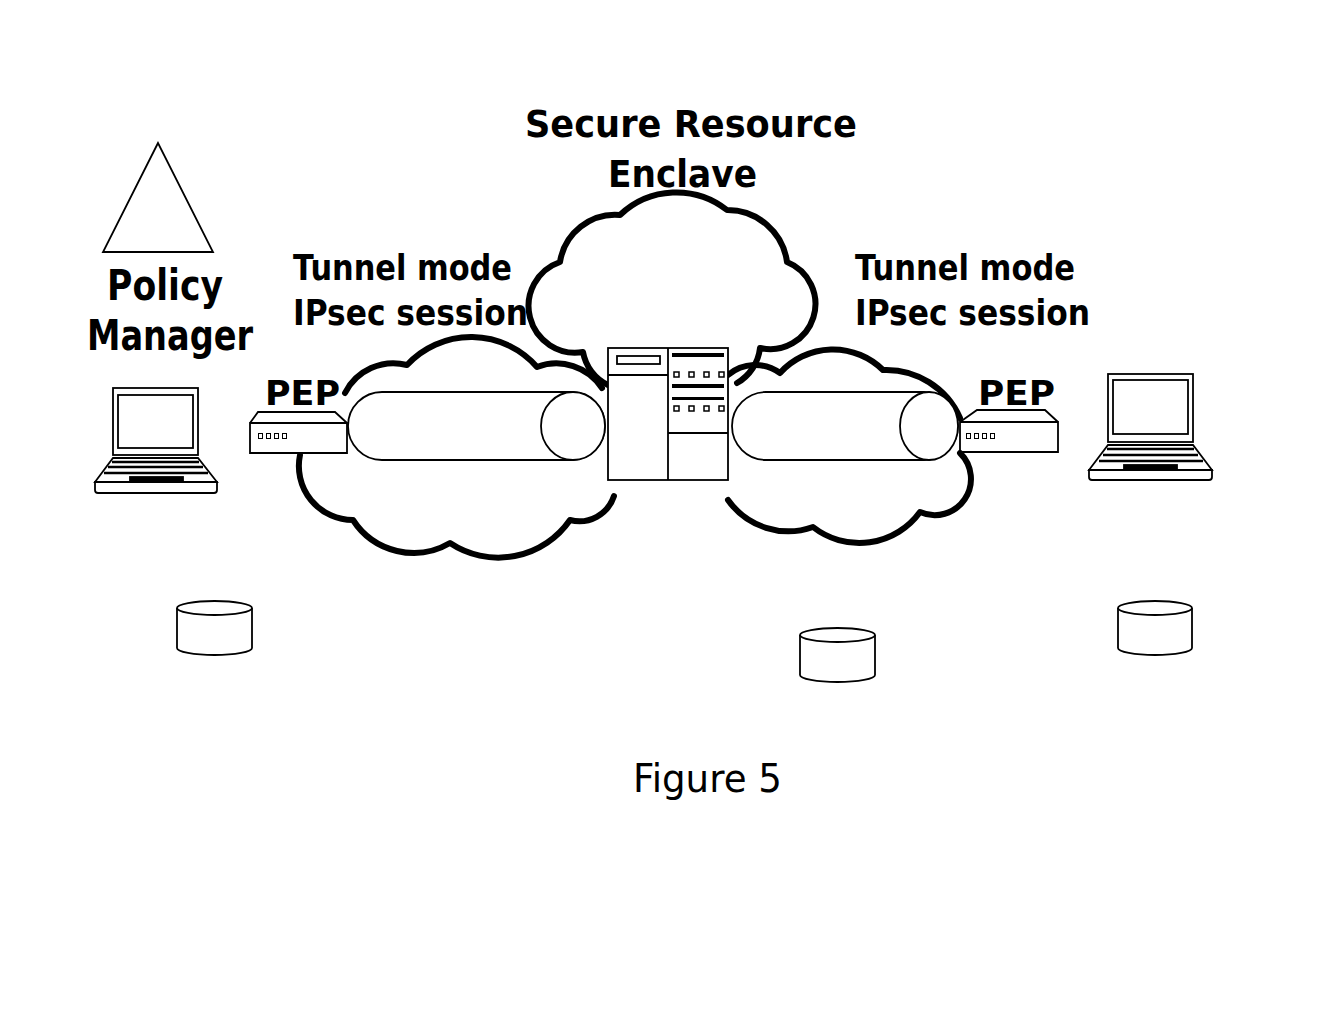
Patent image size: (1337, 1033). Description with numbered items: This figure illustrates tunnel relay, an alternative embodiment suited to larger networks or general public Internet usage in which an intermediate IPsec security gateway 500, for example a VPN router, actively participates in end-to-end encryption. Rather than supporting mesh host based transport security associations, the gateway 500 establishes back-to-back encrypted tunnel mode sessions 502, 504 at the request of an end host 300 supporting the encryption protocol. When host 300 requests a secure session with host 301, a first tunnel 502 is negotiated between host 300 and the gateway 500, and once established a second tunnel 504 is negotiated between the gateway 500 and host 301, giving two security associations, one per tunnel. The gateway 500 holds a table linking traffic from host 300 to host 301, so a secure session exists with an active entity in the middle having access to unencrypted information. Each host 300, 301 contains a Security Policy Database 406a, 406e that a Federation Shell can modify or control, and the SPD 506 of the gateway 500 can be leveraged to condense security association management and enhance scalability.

The IP host 300 is at (201, 488).
The IP host 301 is at (1195, 474).
The IPsec security gateway 500 is at (707, 503).
The first tunnel 502 is at (423, 445).
The second tunnel 504 is at (803, 440).
The Security Policy Database of the intermediate gateway 506 is at (837, 655).
The Security Policy Database 406a is at (214, 628).
The Security Policy Database 406e is at (1155, 628).